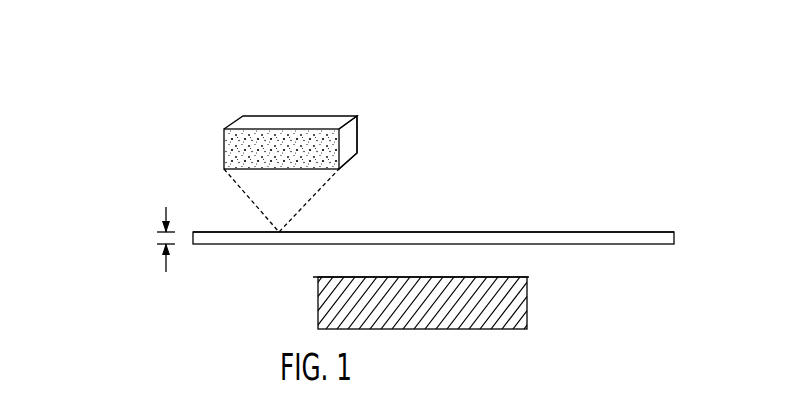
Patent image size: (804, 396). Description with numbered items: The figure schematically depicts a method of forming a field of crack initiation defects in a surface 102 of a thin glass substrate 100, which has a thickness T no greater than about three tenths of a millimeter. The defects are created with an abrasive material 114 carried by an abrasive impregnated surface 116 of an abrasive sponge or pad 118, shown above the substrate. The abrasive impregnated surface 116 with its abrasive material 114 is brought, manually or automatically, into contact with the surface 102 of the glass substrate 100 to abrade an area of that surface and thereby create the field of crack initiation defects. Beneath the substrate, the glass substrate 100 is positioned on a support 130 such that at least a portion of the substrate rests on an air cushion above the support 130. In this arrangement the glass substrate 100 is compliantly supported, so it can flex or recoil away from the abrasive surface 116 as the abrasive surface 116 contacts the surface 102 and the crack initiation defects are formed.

The thin glass substrate 100 is at (644, 238).
The surface 102 is at (495, 232).
The abrasive material 114 is at (273, 133).
The abrasive impregnated surface 116 is at (332, 142).
The abrasive sponge or pad 118 is at (243, 93).
The support 130 is at (433, 313).
The thickness T is at (156, 239).